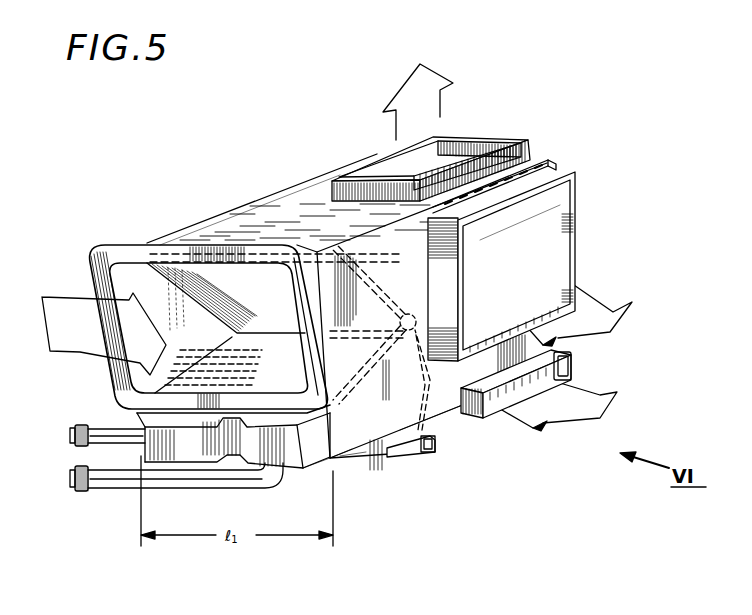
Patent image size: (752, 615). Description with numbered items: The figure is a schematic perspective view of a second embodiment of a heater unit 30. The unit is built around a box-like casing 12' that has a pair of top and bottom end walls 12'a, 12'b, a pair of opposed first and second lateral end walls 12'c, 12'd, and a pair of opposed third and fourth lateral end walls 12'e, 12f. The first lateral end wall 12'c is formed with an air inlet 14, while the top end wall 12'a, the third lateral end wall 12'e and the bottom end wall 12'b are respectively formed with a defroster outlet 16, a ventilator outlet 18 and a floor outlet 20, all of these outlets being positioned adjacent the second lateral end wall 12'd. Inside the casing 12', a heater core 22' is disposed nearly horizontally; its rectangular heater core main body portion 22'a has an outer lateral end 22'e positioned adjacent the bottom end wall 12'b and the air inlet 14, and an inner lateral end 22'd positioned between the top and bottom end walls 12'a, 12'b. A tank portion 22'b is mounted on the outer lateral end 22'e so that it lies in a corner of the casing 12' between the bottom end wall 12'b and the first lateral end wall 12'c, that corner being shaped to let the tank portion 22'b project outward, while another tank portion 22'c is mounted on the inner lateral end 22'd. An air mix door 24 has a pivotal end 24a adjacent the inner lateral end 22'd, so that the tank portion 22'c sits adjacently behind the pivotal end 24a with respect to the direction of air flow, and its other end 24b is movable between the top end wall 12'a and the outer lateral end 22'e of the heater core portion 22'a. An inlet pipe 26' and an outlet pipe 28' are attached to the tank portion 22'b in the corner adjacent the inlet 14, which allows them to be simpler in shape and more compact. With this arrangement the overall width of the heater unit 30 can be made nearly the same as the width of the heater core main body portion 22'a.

The heater unit 30 is at (332, 119).
The casing 12' is at (347, 312).
The fourth lateral end wall 12f is at (317, 180).
The top end wall 12'a is at (250, 210).
The bottom end wall 12'b is at (446, 445).
The first lateral end wall 12'c is at (90, 321).
The second lateral end wall 12'd is at (525, 178).
The third lateral end wall 12'e is at (483, 421).
The air inlet 14 is at (110, 274).
The defroster outlet 16 is at (480, 148).
The ventilator outlet 18 is at (565, 228).
The floor outlet 20 is at (571, 368).
The heater core 22' is at (233, 492).
The heater core main body portion 22'a is at (366, 459).
The tank portion 22'b is at (343, 503).
The tank portion 22'c is at (445, 419).
The inner lateral end 22'd is at (518, 252).
The outer lateral end 22'e is at (365, 483).
The air mix door 24 is at (195, 273).
The pivotal end 24a is at (404, 312).
The other end 24b is at (328, 256).
The inlet pipe 26' is at (154, 487).
The outlet pipe 28' is at (85, 424).